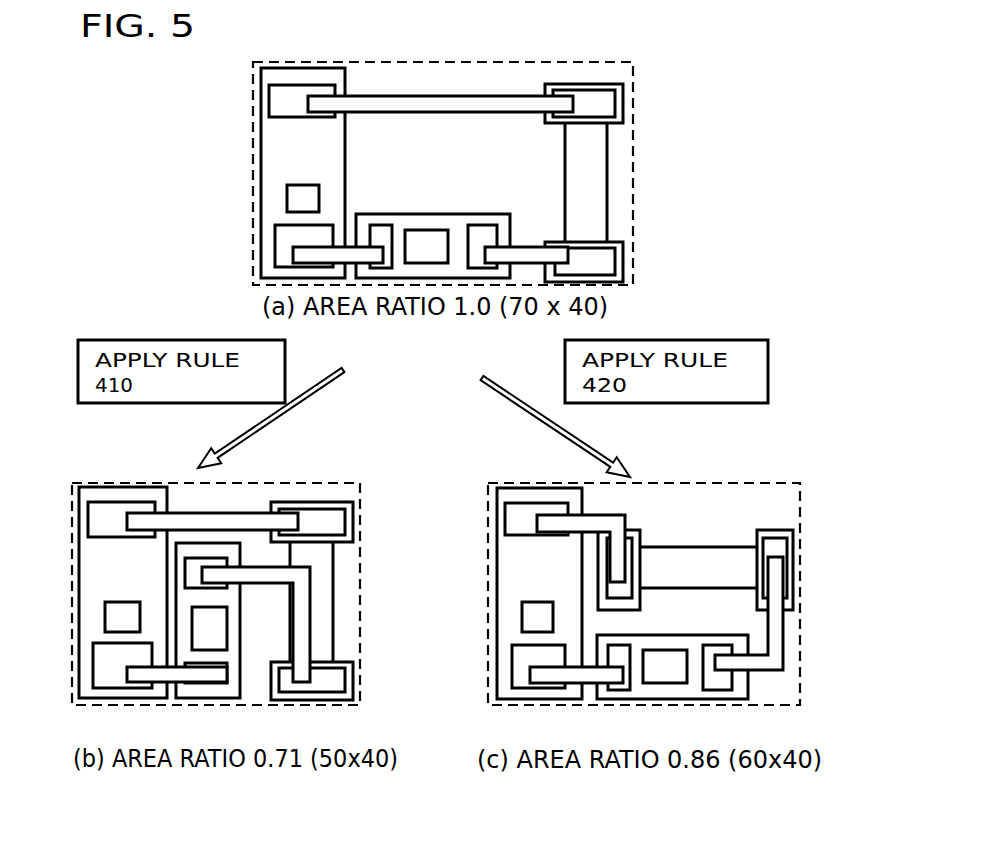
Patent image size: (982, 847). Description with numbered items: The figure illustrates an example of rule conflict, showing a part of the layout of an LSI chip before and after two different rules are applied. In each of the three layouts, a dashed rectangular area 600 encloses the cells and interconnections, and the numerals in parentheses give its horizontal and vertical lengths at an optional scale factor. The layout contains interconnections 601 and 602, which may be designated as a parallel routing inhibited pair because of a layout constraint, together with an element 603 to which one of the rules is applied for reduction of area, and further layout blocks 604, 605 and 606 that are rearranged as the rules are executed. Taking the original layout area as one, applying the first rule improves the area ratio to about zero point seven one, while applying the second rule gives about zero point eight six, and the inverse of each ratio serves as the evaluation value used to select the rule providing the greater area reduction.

The rectangular area 600 is at (633, 68).
The interconnection 601 is at (382, 105).
The interconnection 602 is at (532, 255).
The element 603 is at (495, 220).
The cell 604 is at (268, 153).
The wiring 605 is at (600, 172).
The wiring 606 is at (337, 248).